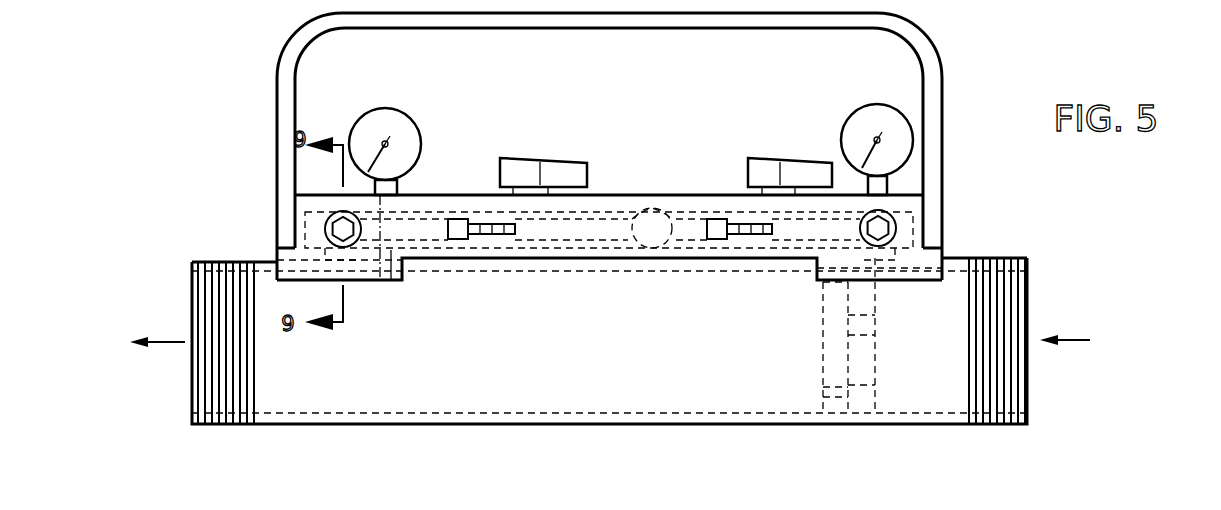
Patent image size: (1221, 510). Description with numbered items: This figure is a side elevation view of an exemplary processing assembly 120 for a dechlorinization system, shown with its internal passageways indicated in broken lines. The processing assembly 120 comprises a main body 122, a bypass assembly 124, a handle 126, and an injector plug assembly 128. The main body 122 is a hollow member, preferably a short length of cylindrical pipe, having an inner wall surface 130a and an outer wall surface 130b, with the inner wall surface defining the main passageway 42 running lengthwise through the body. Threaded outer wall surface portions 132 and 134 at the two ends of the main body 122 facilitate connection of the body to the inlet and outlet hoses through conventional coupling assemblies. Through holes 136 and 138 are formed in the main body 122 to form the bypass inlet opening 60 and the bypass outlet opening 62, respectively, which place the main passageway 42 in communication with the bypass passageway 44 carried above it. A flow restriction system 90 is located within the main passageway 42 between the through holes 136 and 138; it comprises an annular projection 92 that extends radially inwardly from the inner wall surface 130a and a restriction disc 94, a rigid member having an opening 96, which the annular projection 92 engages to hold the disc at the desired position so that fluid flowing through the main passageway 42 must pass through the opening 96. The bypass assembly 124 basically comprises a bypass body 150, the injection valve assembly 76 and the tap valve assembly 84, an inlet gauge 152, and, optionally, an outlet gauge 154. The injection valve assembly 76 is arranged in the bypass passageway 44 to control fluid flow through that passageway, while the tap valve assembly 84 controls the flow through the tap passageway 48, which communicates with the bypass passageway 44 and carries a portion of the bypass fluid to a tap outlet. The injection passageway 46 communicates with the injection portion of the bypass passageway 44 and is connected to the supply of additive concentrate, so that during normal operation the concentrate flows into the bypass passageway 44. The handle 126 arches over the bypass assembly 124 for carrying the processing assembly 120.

The handle 126 is at (274, 80).
The bypass assembly 124 is at (630, 162).
The main passageway 42 is at (557, 382).
The main body 122 is at (680, 425).
The inner wall surface 130a is at (345, 424).
The outer wall surface 130b is at (455, 410).
The threaded outer wall surface portion 134 is at (201, 246).
The threaded outer wall surface portion 132 is at (1008, 248).
The processing assembly 120 is at (1008, 197).
The outlet gauge 154 is at (384, 110).
The inlet gauge 152 is at (869, 110).
The injection valve assembly 76 is at (516, 152).
The tap valve assembly 84 is at (781, 150).
The through hole 138 is at (358, 270).
The through hole 136 is at (892, 270).
The bypass outlet opening 62 is at (347, 272).
The bypass inlet opening 60 is at (890, 272).
The bypass passageway 44 is at (437, 238).
The tap passageway 48 is at (794, 245).
The injection passageway 46 is at (597, 252).
The bypass body 150 is at (653, 185).
The injector plug assembly 128 is at (665, 207).
The flow restriction system 90 is at (817, 358).
The annular projection 92 is at (840, 374).
The restriction disc 94 is at (880, 387).
The opening 96 is at (878, 337).